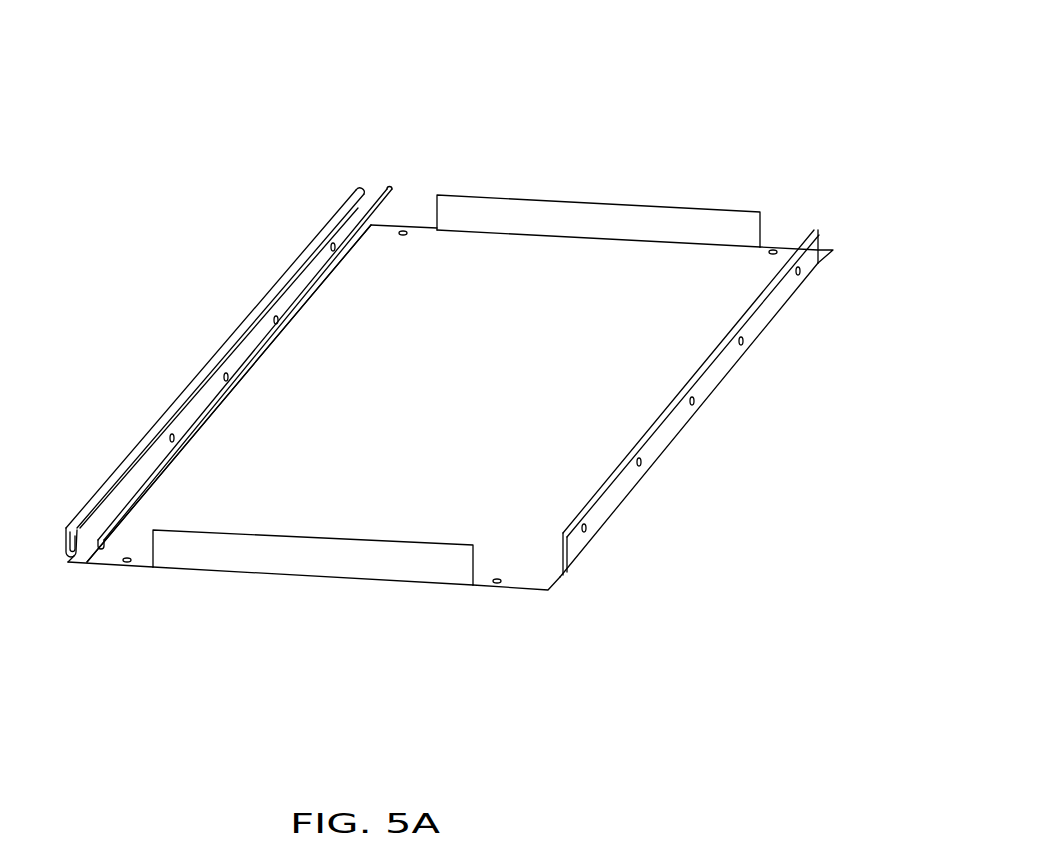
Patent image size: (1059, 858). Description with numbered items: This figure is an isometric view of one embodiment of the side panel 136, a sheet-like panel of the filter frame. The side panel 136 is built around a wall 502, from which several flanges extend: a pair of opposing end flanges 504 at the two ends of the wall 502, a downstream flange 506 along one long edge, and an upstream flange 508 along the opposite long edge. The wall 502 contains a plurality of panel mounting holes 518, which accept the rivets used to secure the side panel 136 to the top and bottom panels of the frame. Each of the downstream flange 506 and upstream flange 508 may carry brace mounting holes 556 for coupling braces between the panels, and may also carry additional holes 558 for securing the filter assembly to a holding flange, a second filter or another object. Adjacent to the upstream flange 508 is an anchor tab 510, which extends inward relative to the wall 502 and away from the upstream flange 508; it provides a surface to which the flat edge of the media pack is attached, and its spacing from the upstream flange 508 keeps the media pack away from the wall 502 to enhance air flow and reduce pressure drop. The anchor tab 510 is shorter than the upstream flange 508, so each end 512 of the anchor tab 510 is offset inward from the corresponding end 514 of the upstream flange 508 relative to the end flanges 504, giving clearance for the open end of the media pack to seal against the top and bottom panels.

The side panel 136 is at (748, 97).
The wall 502 is at (580, 458).
The end flanges 504 is at (657, 206).
The downstream flange 506 is at (821, 238).
The upstream flange 508 is at (362, 192).
The anchor tab 510 is at (237, 381).
The end of the anchor tab 512 is at (395, 198).
The end of the upstream flange 514 is at (385, 190).
The panel mounting holes 518 is at (403, 237).
The brace mounting holes 556 is at (225, 372).
The additional holes 558 is at (118, 515).